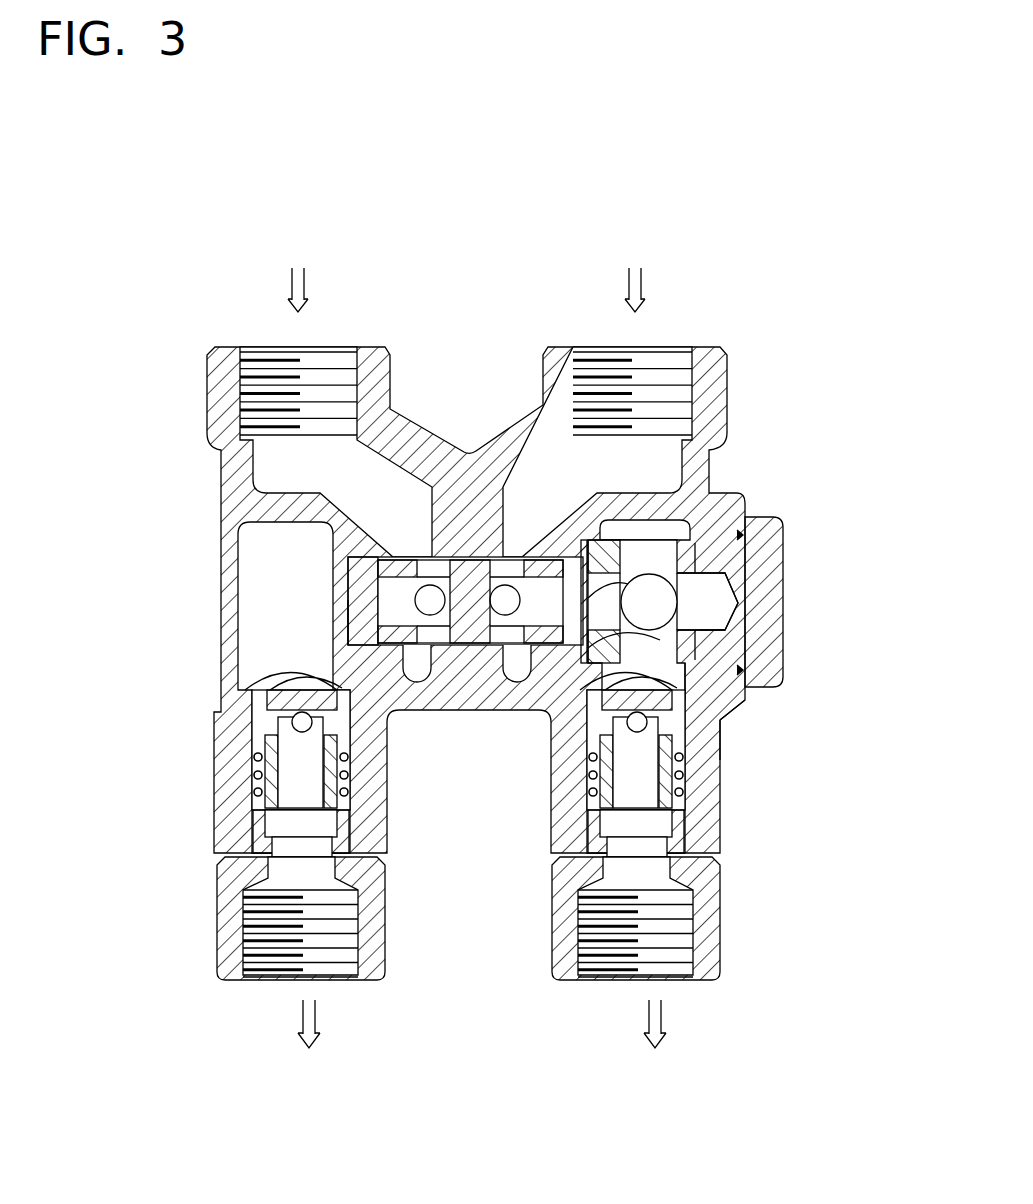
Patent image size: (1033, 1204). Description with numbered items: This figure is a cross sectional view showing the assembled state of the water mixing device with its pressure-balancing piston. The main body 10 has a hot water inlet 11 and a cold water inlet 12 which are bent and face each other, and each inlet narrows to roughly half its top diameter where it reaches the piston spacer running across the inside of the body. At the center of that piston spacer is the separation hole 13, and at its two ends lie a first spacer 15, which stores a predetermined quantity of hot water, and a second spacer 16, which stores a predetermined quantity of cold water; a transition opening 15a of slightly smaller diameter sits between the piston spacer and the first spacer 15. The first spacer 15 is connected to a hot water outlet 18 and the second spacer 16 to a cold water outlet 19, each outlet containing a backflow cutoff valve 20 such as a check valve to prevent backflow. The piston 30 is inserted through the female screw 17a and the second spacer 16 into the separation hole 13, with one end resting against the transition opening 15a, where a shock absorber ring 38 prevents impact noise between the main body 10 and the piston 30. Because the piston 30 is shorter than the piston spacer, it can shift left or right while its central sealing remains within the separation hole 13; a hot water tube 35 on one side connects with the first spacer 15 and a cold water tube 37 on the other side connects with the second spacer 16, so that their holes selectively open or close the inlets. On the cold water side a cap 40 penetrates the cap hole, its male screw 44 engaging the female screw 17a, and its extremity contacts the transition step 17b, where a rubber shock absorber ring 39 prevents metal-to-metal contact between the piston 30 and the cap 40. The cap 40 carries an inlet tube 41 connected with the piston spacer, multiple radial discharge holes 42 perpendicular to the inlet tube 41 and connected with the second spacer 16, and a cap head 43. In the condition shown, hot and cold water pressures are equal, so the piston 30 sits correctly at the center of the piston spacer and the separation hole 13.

The main body 10 is at (195, 450).
The hot water inlet 11 is at (268, 372).
The cold water inlet 12 is at (663, 375).
The separation hole 13 is at (510, 567).
The first spacer 15 is at (258, 548).
The transition opening 15a is at (343, 625).
The second spacer 16 is at (660, 520).
The female screw 17a is at (738, 703).
The transition step 17b is at (722, 716).
The hot water outlet 18 is at (300, 683).
The cold water outlet 19 is at (720, 700).
The backflow cutoff valve 20 is at (460, 760).
The piston 30 is at (443, 652).
The hot water tube 35 is at (377, 650).
The cold water tube 37 is at (560, 650).
The shock absorber ring 38 is at (342, 575).
The shock absorber ring 39 is at (738, 628).
The cap 40 is at (760, 668).
The inlet tube 41 is at (622, 612).
The discharge holes 42 is at (713, 582).
The cap head 43 is at (762, 525).
The male screw 44 is at (735, 548).